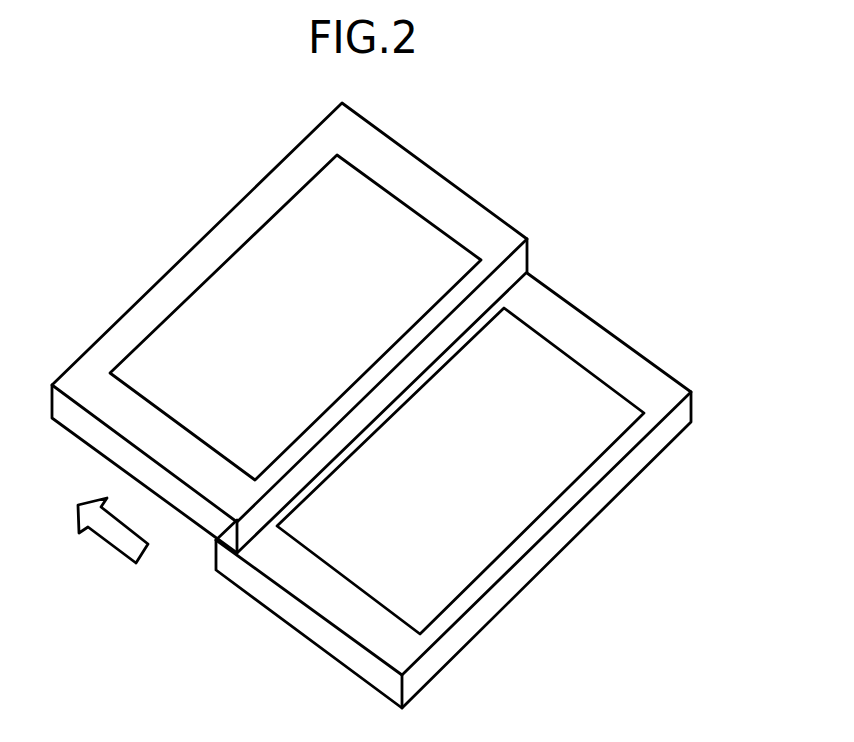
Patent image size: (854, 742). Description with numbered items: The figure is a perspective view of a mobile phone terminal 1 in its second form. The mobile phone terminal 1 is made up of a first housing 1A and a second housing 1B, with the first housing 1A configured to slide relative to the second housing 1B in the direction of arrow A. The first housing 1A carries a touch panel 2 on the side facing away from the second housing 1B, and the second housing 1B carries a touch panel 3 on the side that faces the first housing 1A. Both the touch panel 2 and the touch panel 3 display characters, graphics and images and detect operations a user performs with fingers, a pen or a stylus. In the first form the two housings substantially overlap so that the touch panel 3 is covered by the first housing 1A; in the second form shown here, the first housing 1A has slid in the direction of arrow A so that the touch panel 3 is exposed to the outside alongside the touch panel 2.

The mobile phone terminal 1 is at (577, 151).
The first housing 1A is at (431, 200).
The second housing 1B is at (593, 340).
The touch panel 2 is at (258, 278).
The touch panel 3 is at (522, 498).
The arrow A is at (112, 545).